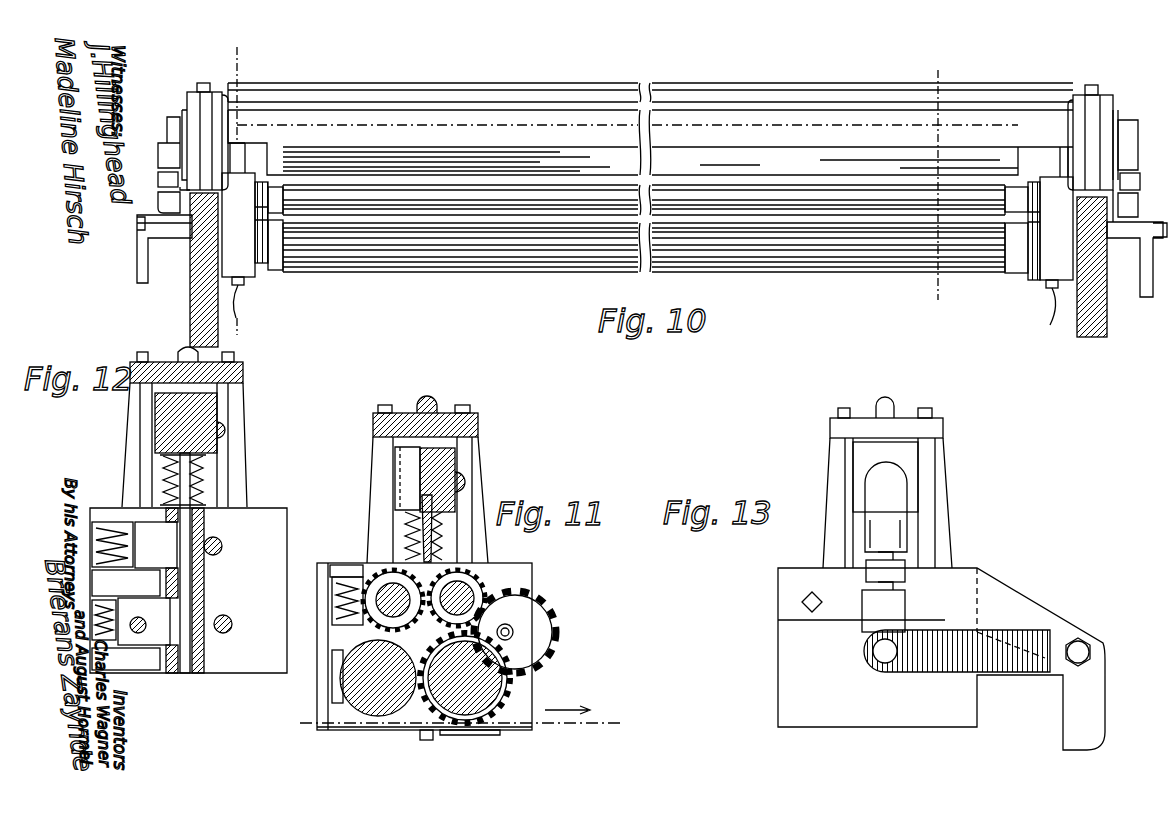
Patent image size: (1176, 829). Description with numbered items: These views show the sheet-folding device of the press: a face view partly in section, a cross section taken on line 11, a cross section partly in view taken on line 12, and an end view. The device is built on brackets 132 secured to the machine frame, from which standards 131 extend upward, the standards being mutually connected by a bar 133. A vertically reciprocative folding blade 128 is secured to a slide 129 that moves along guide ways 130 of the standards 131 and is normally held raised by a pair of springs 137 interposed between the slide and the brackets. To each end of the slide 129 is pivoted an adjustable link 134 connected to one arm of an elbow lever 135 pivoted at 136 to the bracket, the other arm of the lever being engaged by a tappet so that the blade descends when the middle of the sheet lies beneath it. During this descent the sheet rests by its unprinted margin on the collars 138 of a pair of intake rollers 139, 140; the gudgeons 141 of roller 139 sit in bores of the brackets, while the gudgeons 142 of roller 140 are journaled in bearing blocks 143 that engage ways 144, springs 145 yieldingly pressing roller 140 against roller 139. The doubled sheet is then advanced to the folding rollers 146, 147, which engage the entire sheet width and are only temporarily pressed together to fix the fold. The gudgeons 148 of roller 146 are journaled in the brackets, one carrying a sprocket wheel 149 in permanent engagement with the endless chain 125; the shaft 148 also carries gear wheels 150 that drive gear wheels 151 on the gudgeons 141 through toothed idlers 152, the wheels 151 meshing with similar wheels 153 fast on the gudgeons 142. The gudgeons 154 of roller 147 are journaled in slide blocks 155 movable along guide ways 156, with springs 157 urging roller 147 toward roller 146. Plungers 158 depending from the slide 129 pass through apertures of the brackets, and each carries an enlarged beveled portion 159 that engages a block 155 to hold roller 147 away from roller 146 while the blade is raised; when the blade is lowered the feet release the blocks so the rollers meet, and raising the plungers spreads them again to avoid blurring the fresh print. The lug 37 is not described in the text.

In FIG. 10, the section line 11— 11 is at (935, 187).
In FIG. 10, the section line 12— 12 is at (243, 190).
In FIG. 11, the lug 37 is at (468, 486).
In FIG. 11, the endless chain 125 is at (610, 722).
In FIG. 10, the folding blade 128 is at (705, 165).
In FIG. 11, the folding blade 128 is at (440, 540).
In FIG. 10, the slide 129 is at (184, 110).
In FIG. 12, the slide 129 is at (200, 416).
In FIG. 11, the slide 129 is at (445, 464).
In FIG. 13, the slide 129 is at (860, 457).
In FIG. 12, the guide ways 130 is at (160, 492).
In FIG. 11, the guide ways 130 is at (402, 520).
In FIG. 13, the guide ways 130 is at (912, 528).
In FIG. 10, the standards 131 is at (204, 130).
In FIG. 12, the standards 131 is at (140, 416).
In FIG. 11, the standards 131 is at (378, 445).
In FIG. 13, the standards 131 is at (940, 471).
In FIG. 10, the brackets 132 is at (215, 200).
In FIG. 12, the brackets 132 is at (188, 590).
In FIG. 11, the brackets 132 is at (530, 703).
In FIG. 13, the brackets 132 is at (941, 659).
In FIG. 10, the bar 133 is at (786, 100).
In FIG. 10, the adjustable link 134 is at (158, 182).
In FIG. 13, the adjustable link 134 is at (905, 563).
In FIG. 10, the elbow lever 135 is at (138, 263).
In FIG. 13, the elbow lever 135 is at (1075, 698).
In FIG. 13, the pivot 136 is at (1086, 645).
In FIG. 12, the springs 137 is at (165, 470).
In FIG. 10, the collars 138 is at (276, 212).
In FIG. 11, the collars 138 is at (362, 624).
In FIG. 10, the intake roller 139 is at (522, 196).
In FIG. 11, the intake roller 139 is at (470, 597).
In FIG. 11, the intake roller 140 is at (386, 590).
In FIG. 12, the gudgeons 141 is at (221, 547).
In FIG. 12, the gudgeons 142 is at (156, 545).
In FIG. 12, the bearing blocks 143 is at (170, 565).
In FIG. 11, the bearing blocks 143 is at (335, 575).
In FIG. 12, the ways 144 is at (113, 522).
In FIG. 12, the springs 145 is at (126, 583).
In FIG. 11, the springs 145 is at (338, 600).
In FIG. 10, the folding roller 146 is at (841, 262).
In FIG. 11, the folding roller 146 is at (500, 680).
In FIG. 11, the folding roller 147 is at (373, 702).
In FIG. 12, the gudgeons 148 is at (230, 630).
In FIG. 10, the sprocket wheel 149 is at (1030, 272).
In FIG. 11, the sprocket wheel 149 is at (500, 722).
In FIG. 10, the gear wheels 150 is at (244, 272).
In FIG. 11, the gear wheels 150 is at (470, 735).
In FIG. 10, the gear wheels 151 is at (256, 196).
In FIG. 11, the gear wheels 151 is at (470, 578).
In FIG. 10, the toothed idlers 152 is at (246, 238).
In FIG. 11, the toothed idlers 152 is at (538, 634).
In FIG. 11, the gear wheels 153 is at (386, 572).
In FIG. 12, the gudgeons 154 is at (140, 632).
In FIG. 12, the slide blocks 155 is at (144, 621).
In FIG. 12, the guide ways 156 is at (126, 635).
In FIG. 12, the springs 157 is at (115, 632).
In FIG. 10, the plungers 158 is at (240, 152).
In FIG. 12, the plungers 158 is at (190, 525).
In FIG. 10, the beveled portion 159 is at (240, 314).
In FIG. 12, the beveled portion 159 is at (186, 668).
In FIG. 11, the beveled portion 159 is at (426, 740).